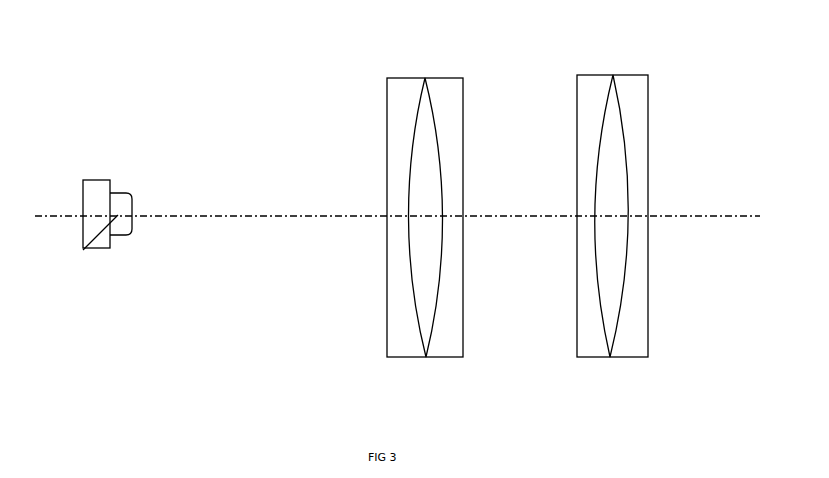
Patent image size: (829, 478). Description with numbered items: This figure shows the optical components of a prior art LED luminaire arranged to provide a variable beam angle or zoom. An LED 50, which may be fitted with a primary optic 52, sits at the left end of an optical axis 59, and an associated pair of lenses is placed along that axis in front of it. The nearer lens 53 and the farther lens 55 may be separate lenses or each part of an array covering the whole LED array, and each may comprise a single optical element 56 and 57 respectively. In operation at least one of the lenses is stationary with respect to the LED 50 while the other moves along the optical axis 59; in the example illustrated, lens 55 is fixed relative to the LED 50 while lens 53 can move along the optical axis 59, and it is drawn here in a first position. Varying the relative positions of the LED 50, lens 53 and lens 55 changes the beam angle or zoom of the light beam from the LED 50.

The LED 50 is at (90, 188).
The primary optic 52 is at (83, 250).
The lens 53 is at (433, 66).
The lens 55 is at (621, 66).
The single optical element 56 is at (427, 357).
The single optical element 57 is at (610, 357).
The optical axis 59 is at (718, 216).